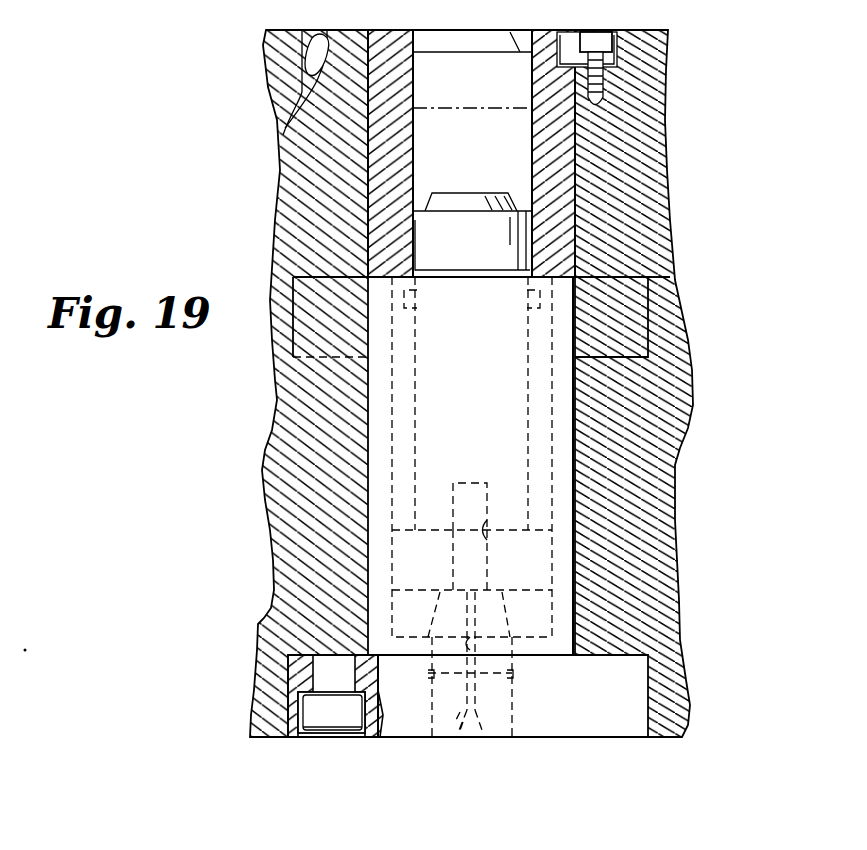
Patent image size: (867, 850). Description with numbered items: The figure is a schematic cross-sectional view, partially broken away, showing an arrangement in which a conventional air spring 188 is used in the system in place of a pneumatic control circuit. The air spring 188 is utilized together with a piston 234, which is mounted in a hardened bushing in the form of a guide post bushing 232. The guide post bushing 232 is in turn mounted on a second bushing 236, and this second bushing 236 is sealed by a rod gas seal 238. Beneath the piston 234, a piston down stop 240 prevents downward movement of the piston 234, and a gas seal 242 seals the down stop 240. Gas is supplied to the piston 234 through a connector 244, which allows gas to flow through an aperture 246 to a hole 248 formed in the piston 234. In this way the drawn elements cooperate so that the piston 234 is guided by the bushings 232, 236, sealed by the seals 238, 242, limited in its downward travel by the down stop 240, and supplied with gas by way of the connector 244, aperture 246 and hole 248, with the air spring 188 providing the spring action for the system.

The guide post bushing 232 is at (370, 152).
The piston 234 is at (523, 240).
The second bushing 236 is at (552, 334).
The rod gas seal 238 is at (538, 304).
The air spring 188 is at (528, 510).
The hole 248 is at (487, 540).
The piston down stop 240 is at (512, 625).
The aperture 246 is at (470, 644).
The gas seal 242 is at (516, 676).
The connector 244 is at (482, 718).